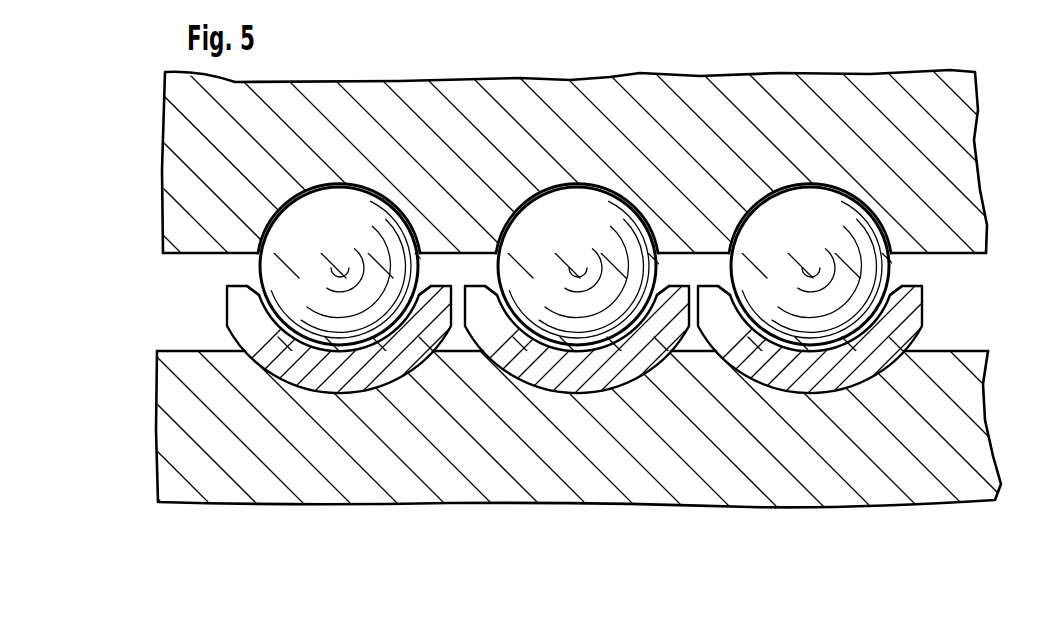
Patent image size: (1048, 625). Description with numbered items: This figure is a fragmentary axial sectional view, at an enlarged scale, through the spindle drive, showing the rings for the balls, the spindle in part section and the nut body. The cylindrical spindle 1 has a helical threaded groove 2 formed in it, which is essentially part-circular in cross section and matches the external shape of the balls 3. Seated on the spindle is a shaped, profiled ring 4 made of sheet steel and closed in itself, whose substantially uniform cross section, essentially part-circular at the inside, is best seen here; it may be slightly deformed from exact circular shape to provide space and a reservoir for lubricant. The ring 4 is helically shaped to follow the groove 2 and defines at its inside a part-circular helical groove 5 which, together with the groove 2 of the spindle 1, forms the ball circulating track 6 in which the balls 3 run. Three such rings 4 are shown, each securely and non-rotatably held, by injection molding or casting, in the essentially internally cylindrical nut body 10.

The spindle 1 is at (183, 106).
The helical threaded groove 2 is at (260, 229).
The ball 3 is at (343, 205).
The profiled ring 4 is at (247, 308).
The helical groove 5 is at (247, 293).
The ball circulating track 6 is at (252, 268).
The nut body 10 is at (238, 478).